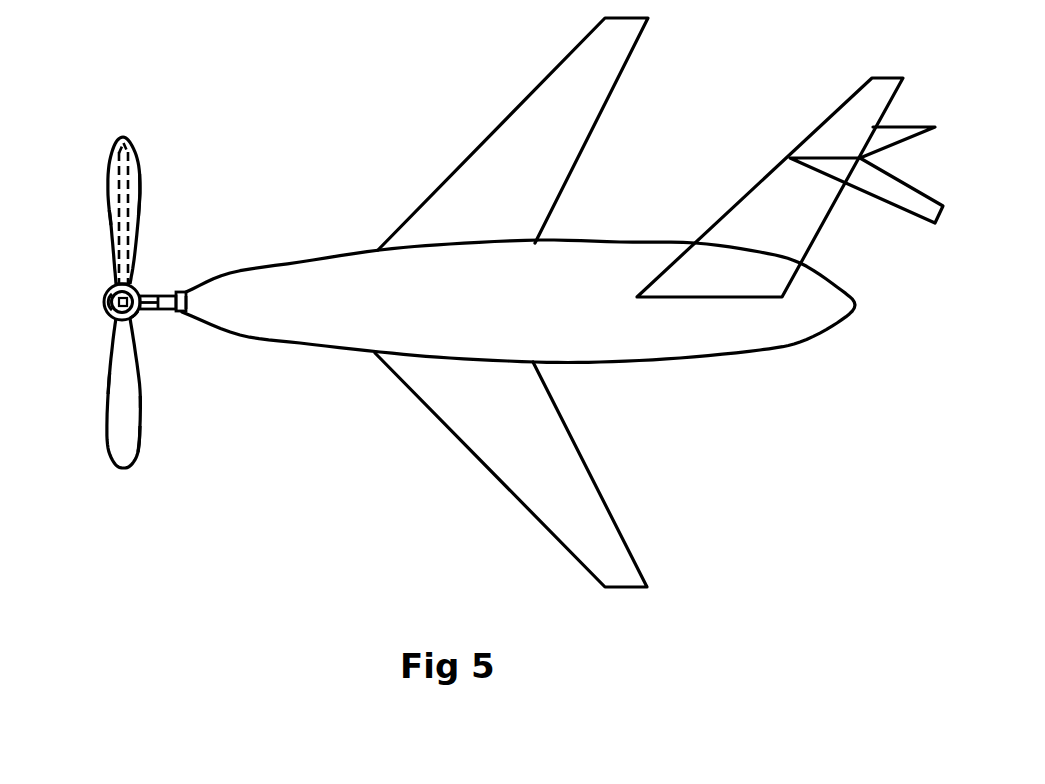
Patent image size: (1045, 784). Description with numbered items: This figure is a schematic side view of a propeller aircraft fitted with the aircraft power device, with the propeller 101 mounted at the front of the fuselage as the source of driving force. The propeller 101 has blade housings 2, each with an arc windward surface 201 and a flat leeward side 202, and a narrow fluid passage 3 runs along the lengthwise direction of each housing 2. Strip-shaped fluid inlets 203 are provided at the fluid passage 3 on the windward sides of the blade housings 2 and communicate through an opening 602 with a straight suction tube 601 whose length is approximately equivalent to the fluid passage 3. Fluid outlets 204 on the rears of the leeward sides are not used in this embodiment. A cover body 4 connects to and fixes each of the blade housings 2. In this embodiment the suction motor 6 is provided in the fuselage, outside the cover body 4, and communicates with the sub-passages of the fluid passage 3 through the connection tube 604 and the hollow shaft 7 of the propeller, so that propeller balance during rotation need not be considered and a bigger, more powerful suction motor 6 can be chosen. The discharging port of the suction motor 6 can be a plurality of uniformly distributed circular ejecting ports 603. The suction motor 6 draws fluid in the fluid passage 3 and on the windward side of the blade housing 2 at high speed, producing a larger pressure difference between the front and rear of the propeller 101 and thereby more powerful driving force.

The blade housing 2 is at (118, 257).
The fluid passage 3 is at (125, 385).
The cover body 4 is at (112, 290).
The suction motor 6 is at (113, 317).
The hollow shaft 7 is at (170, 293).
The propeller 101 is at (135, 207).
The arc windward surface 201 is at (108, 375).
The flat leeward side 202 is at (142, 284).
The fluid inlet 203 is at (112, 223).
The fluid outlet 204 is at (205, 455).
The suction tube 601 is at (123, 208).
The opening 602 is at (125, 147).
The ejecting port 603 is at (135, 316).
The connection tube 604 is at (182, 293).